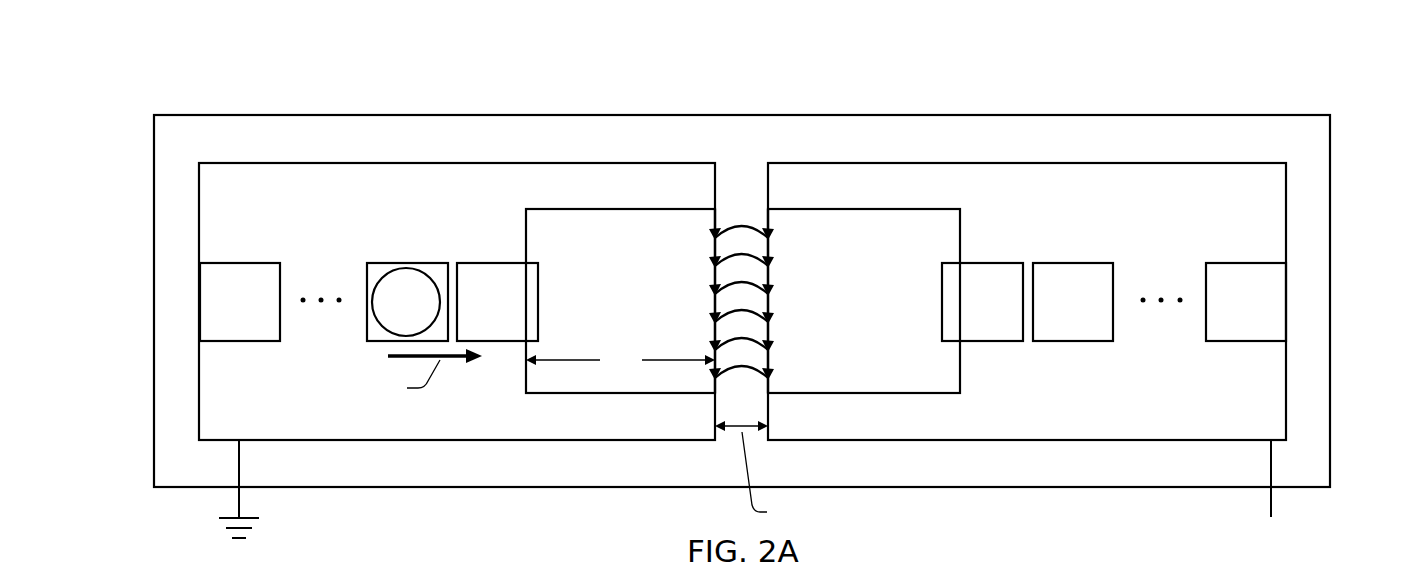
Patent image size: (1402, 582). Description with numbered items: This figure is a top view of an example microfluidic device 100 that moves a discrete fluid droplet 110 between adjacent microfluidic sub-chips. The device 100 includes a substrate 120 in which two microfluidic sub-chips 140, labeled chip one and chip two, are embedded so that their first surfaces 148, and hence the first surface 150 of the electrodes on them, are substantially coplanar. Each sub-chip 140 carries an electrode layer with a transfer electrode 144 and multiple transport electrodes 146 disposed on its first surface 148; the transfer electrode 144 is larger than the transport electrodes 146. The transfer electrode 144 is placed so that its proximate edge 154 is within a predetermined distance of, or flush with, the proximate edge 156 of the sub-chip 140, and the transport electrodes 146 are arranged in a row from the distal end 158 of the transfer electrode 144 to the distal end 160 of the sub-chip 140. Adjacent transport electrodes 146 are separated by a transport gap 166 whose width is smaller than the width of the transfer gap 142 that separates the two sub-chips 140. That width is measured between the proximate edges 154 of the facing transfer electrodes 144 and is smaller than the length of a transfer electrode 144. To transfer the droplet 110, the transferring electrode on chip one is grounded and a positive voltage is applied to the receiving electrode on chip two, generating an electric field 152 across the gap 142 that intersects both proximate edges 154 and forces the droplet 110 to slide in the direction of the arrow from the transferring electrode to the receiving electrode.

The microfluidic device 100 is at (187, 80).
The droplet 110 is at (380, 337).
The substrate 120 is at (154, 163).
The microfluidic sub-chips 140 is at (315, 163).
The transfer gap 142 is at (735, 178).
The transfer electrode 144 is at (600, 208).
The transport electrodes 146 is at (240, 263).
The first surface 148 is at (420, 187).
The first surface of the electrodes 150 is at (570, 378).
The electric field 152 is at (750, 225).
The proximate edge of the transfer electrode 154 is at (711, 208).
The proximate edge of the microfluidic sub-chip 156 is at (713, 412).
The distal end of the transfer electrode 158 is at (525, 220).
The distal end of the microfluidic sub-chip 160 is at (199, 385).
The transport gap 166 is at (1036, 352).